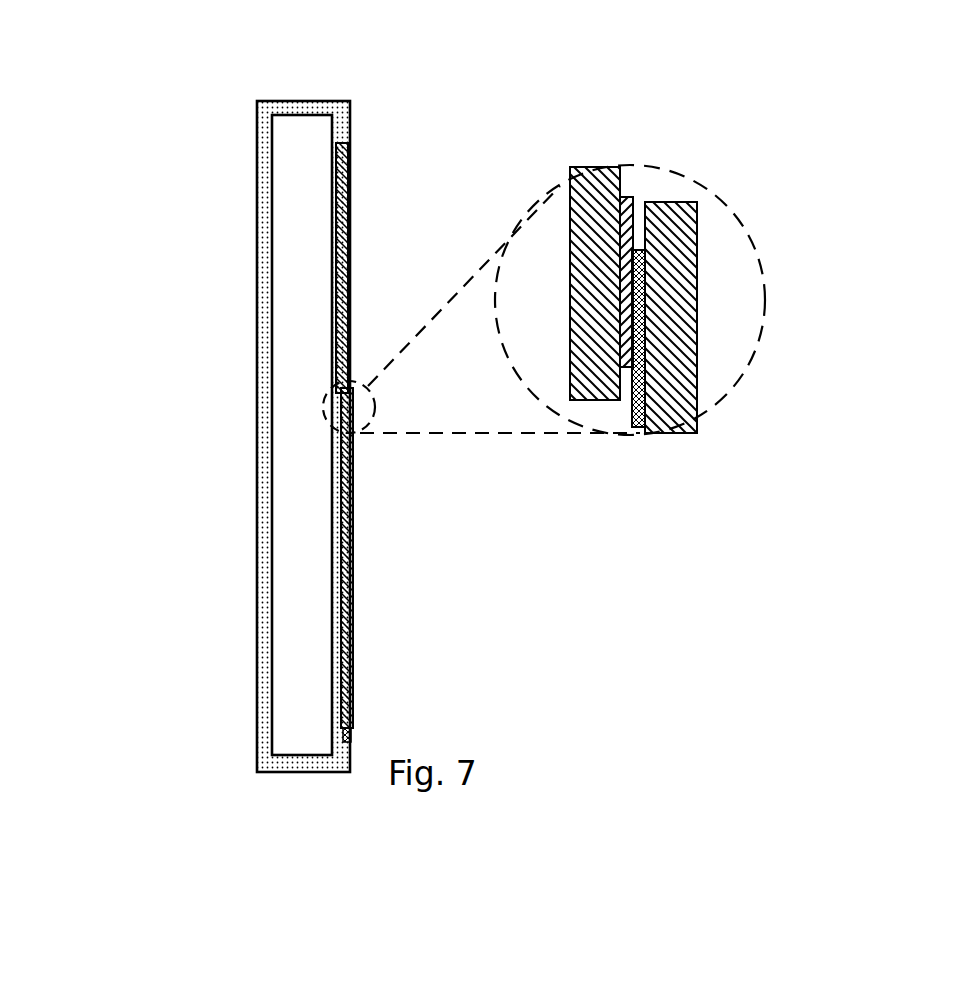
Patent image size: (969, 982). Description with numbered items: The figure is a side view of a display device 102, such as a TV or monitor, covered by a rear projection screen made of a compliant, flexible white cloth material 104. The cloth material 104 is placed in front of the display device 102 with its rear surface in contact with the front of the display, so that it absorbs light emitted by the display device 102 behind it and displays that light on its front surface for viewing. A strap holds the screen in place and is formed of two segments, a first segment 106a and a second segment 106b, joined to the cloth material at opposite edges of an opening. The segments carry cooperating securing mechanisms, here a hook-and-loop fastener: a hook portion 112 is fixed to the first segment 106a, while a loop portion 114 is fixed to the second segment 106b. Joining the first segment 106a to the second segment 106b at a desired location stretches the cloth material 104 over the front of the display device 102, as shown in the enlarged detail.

The display device 102 is at (310, 262).
The white cloth material 104 is at (258, 352).
The first segment 106a is at (573, 177).
The second segment 106b is at (689, 425).
The hook portion 112 is at (630, 198).
The loop portion 114 is at (636, 432).